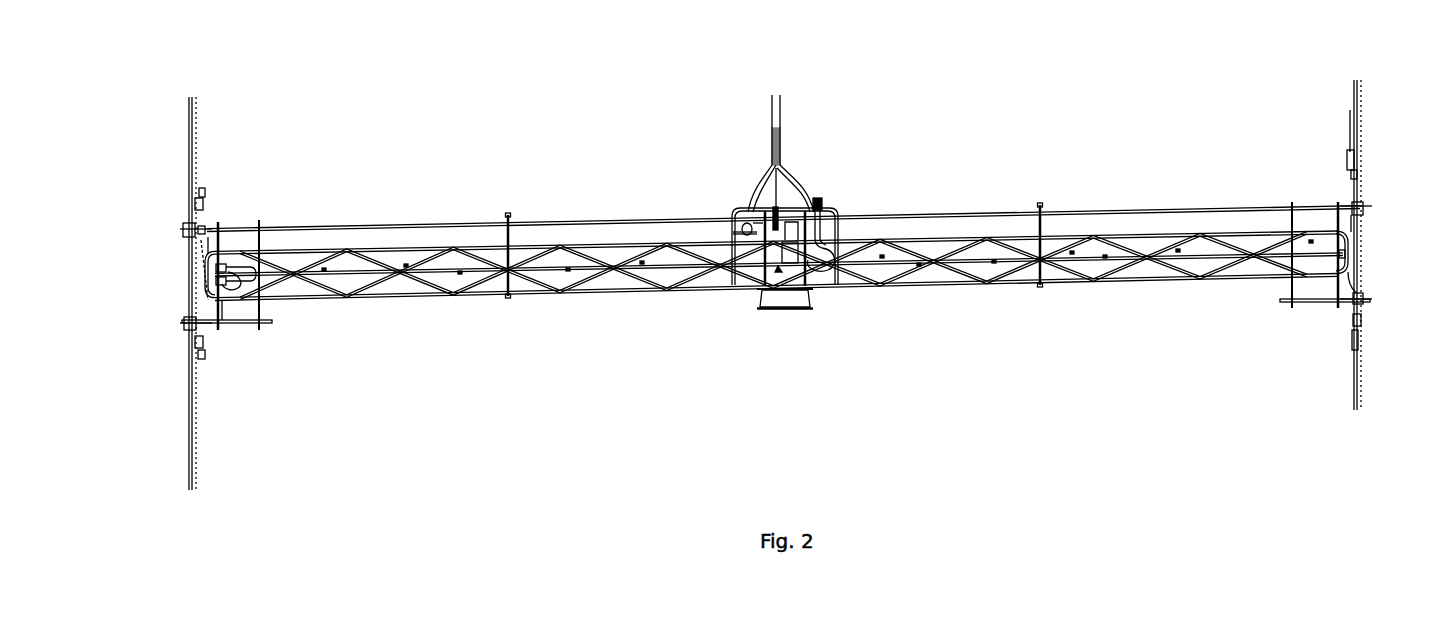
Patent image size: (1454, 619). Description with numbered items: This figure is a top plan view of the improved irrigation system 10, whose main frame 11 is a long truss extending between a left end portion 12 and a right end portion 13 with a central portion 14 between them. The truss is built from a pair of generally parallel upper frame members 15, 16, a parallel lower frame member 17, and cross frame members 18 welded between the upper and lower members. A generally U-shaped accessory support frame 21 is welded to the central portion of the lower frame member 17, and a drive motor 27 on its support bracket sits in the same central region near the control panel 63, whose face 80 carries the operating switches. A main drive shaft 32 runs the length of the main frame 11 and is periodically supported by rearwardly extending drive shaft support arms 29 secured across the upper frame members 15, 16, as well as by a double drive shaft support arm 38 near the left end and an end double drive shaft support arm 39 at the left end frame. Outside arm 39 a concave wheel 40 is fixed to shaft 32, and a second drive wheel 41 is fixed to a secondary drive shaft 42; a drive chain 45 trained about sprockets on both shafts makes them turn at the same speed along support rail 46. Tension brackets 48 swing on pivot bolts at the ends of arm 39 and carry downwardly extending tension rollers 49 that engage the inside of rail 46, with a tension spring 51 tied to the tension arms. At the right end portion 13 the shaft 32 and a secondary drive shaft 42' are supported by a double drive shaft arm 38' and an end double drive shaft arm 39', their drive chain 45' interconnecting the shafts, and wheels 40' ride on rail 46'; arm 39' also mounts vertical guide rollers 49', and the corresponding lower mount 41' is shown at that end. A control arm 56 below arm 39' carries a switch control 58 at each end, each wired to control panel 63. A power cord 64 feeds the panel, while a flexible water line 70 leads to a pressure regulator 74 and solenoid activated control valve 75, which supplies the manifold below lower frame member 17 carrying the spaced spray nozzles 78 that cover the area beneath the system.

The irrigation system 10 is at (530, 83).
The main frame 11 is at (641, 246).
The left end portion 12 is at (332, 180).
The right end portion 13 is at (1267, 120).
The central portion 14 is at (815, 157).
The upper frame member 15 is at (903, 283).
The upper frame member 16 is at (935, 245).
The lower frame member 17 is at (970, 261).
The cross frame members 18 is at (1010, 280).
The accessory support frame 21 is at (828, 213).
The drive motor 27 is at (822, 234).
The drive shaft support arms 29 is at (513, 237).
The main drive shaft 32 is at (420, 225).
The double drive shaft support arm 38 is at (261, 244).
The double drive shaft arm 38' is at (1267, 275).
The end double drive shaft support arm 39 is at (164, 268).
The end double drive shaft arm 39' is at (1397, 237).
The concave wheel 40 is at (166, 232).
The wheels 40' is at (1390, 213).
The second drive wheel 41 is at (167, 308).
The right lower bracket 41' is at (1393, 309).
The secondary drive shaft 42 is at (238, 374).
The secondary drive shaft 42' is at (1305, 354).
The drive chain 45 is at (235, 364).
The drive chain 45' is at (1396, 280).
The support rail 46 is at (163, 293).
The rail 46' is at (1402, 267).
The tension brackets 48 is at (198, 206).
The tension rollers 49 is at (163, 261).
The guide rollers 49' is at (1363, 286).
The tension spring 51 is at (240, 283).
The control arm 56 is at (1347, 165).
The switch control 58 is at (1352, 156).
The control panel 63 is at (777, 295).
The power cord 64 is at (783, 142).
The flexible water line 70 is at (766, 160).
The pressure regulator 74 is at (745, 228).
The solenoid activated control valve 75 is at (740, 230).
The spray nozzles 78 is at (1105, 258).
The face 80 is at (768, 310).